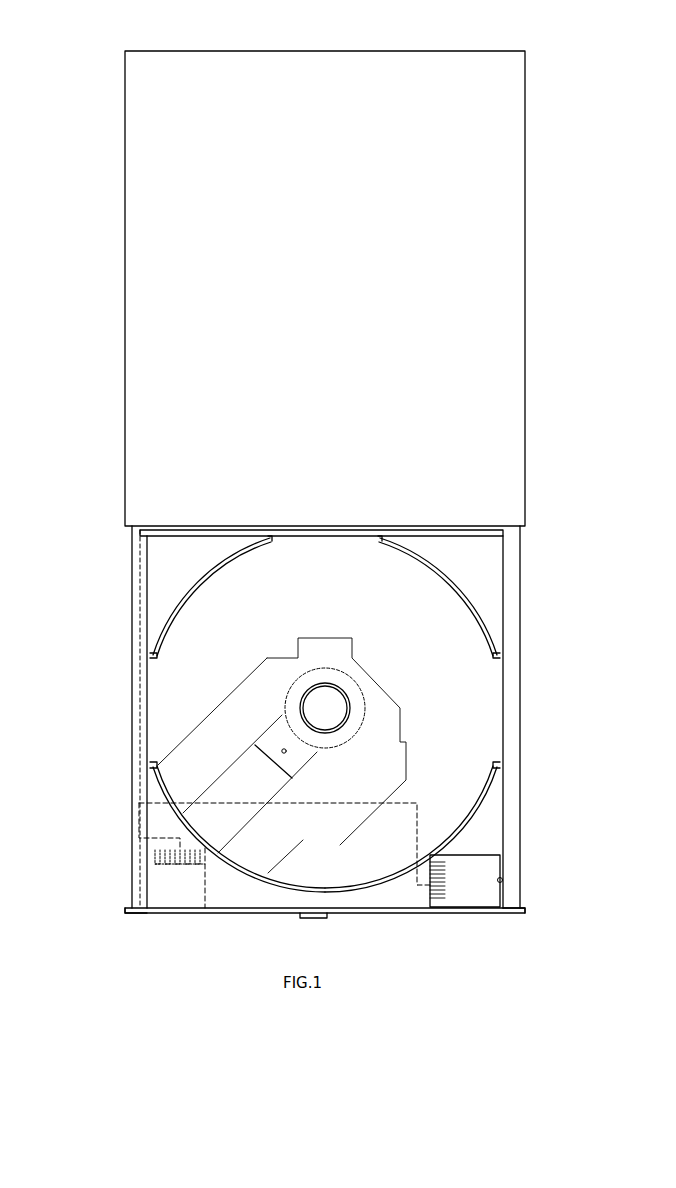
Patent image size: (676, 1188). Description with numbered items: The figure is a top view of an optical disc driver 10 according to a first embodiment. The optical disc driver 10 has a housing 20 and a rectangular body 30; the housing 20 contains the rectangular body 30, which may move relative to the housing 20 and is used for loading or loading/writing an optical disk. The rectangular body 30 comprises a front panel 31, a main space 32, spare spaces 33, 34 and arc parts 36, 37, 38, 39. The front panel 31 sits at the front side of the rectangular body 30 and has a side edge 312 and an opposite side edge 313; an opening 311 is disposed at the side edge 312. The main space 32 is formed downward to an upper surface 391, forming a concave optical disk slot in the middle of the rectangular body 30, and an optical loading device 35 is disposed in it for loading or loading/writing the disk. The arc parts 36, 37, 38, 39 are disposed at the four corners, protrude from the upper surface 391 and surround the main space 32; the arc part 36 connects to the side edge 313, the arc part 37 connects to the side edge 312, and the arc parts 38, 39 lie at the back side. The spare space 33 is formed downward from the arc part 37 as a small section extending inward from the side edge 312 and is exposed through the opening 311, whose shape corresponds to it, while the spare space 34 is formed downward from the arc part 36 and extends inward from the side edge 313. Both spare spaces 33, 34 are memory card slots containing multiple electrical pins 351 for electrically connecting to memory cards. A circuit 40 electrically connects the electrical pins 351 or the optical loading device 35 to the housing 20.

The optical disc driver 10 is at (105, 39).
The housing 20 is at (103, 239).
The rectangular body 30 is at (313, 741).
The front panel 31 is at (324, 925).
The opening 311 is at (189, 884).
The side edge 312 is at (126, 911).
The side edge 313 is at (524, 911).
The main space 32 is at (327, 714).
The spare space 33 is at (284, 879).
The spare space 34 is at (478, 868).
The optical loading device 35 is at (265, 745).
The electrical pins 351 is at (150, 860).
The arc part 36 is at (492, 830).
The arc part 37 is at (160, 826).
The arc part 38 is at (492, 606).
The arc part 39 is at (158, 607).
The upper surface 391 is at (462, 712).
The circuit 40 is at (140, 640).